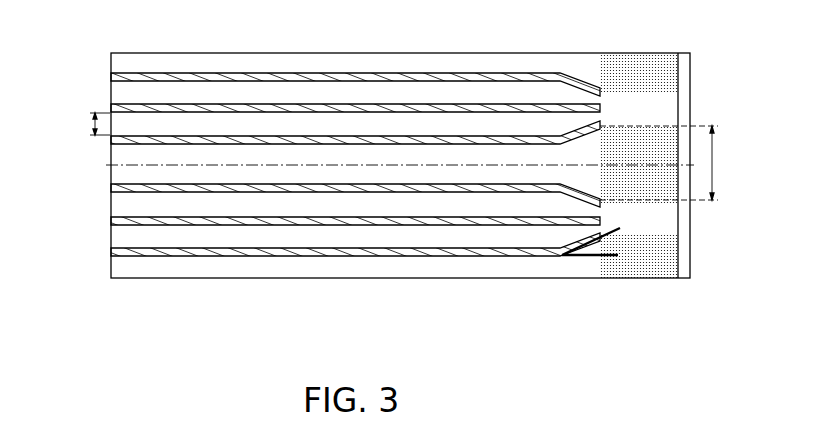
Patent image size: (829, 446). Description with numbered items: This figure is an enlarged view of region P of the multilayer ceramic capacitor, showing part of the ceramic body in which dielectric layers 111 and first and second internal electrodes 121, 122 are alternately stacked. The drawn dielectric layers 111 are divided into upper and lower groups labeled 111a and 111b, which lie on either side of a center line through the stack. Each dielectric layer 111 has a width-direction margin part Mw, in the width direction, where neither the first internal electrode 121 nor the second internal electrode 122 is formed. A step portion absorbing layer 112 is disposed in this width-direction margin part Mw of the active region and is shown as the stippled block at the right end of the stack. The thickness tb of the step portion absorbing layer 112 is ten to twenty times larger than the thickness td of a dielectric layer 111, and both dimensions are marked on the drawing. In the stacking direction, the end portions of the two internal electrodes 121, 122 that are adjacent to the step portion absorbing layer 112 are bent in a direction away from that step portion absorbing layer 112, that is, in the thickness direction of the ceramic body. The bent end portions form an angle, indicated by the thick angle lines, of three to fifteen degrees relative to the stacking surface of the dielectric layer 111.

The dielectric layer 111 is at (348, 191).
The first electrode plates 111a is at (114, 154).
The second electrode plates 111b is at (325, 253).
The step portion absorbing layer 112 is at (658, 116).
The first internal electrode 121 is at (486, 218).
The second internal electrode 122 is at (531, 257).
The width-direction margin part Mw is at (640, 218).
The thickness of the dielectric layer td is at (92, 124).
The thickness of the step portion absorbing layer tb is at (664, 163).
The region P is at (408, 358).